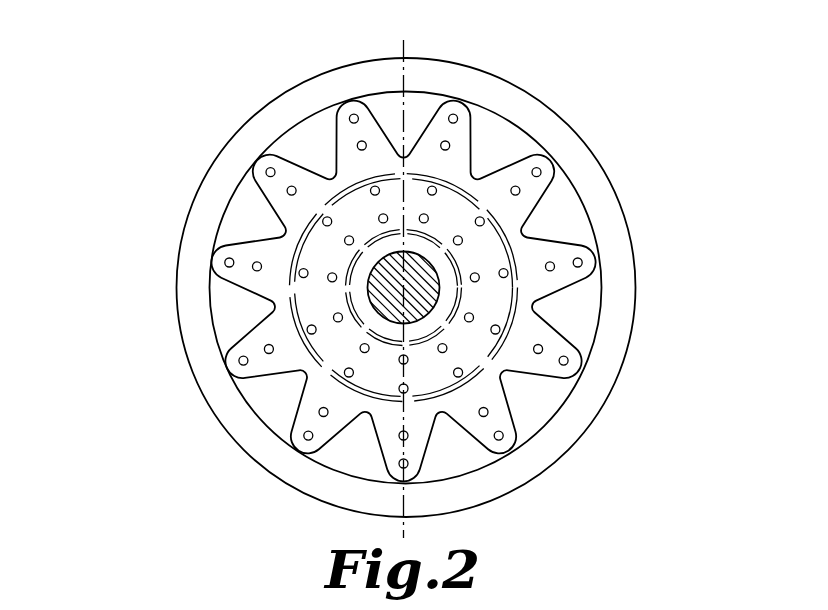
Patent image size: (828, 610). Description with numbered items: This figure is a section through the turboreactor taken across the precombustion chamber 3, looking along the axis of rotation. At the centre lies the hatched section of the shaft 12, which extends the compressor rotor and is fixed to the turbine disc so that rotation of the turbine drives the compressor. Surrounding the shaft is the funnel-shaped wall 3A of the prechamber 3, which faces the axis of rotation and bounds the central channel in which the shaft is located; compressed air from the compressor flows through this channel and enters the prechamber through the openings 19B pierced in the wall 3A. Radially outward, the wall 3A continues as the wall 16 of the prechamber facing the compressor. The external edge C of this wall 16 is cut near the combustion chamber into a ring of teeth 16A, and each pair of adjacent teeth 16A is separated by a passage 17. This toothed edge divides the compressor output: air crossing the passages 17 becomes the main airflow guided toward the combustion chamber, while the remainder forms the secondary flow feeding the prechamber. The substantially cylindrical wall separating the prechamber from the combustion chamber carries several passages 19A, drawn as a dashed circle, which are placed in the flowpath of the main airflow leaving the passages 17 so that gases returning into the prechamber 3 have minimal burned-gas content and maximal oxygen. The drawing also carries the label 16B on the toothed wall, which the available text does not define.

The precombustion chamber 3 is at (458, 221).
The wall of the prechamber 3A is at (367, 237).
The shaft 12 is at (404, 288).
The wall of the prechamber 16 is at (214, 260).
The teeth 16A is at (285, 168).
The spoke arm side 16B is at (266, 167).
The passage 17 is at (277, 412).
The passages 19A is at (296, 302).
The openings 19B is at (479, 275).
The external edge C is at (260, 342).